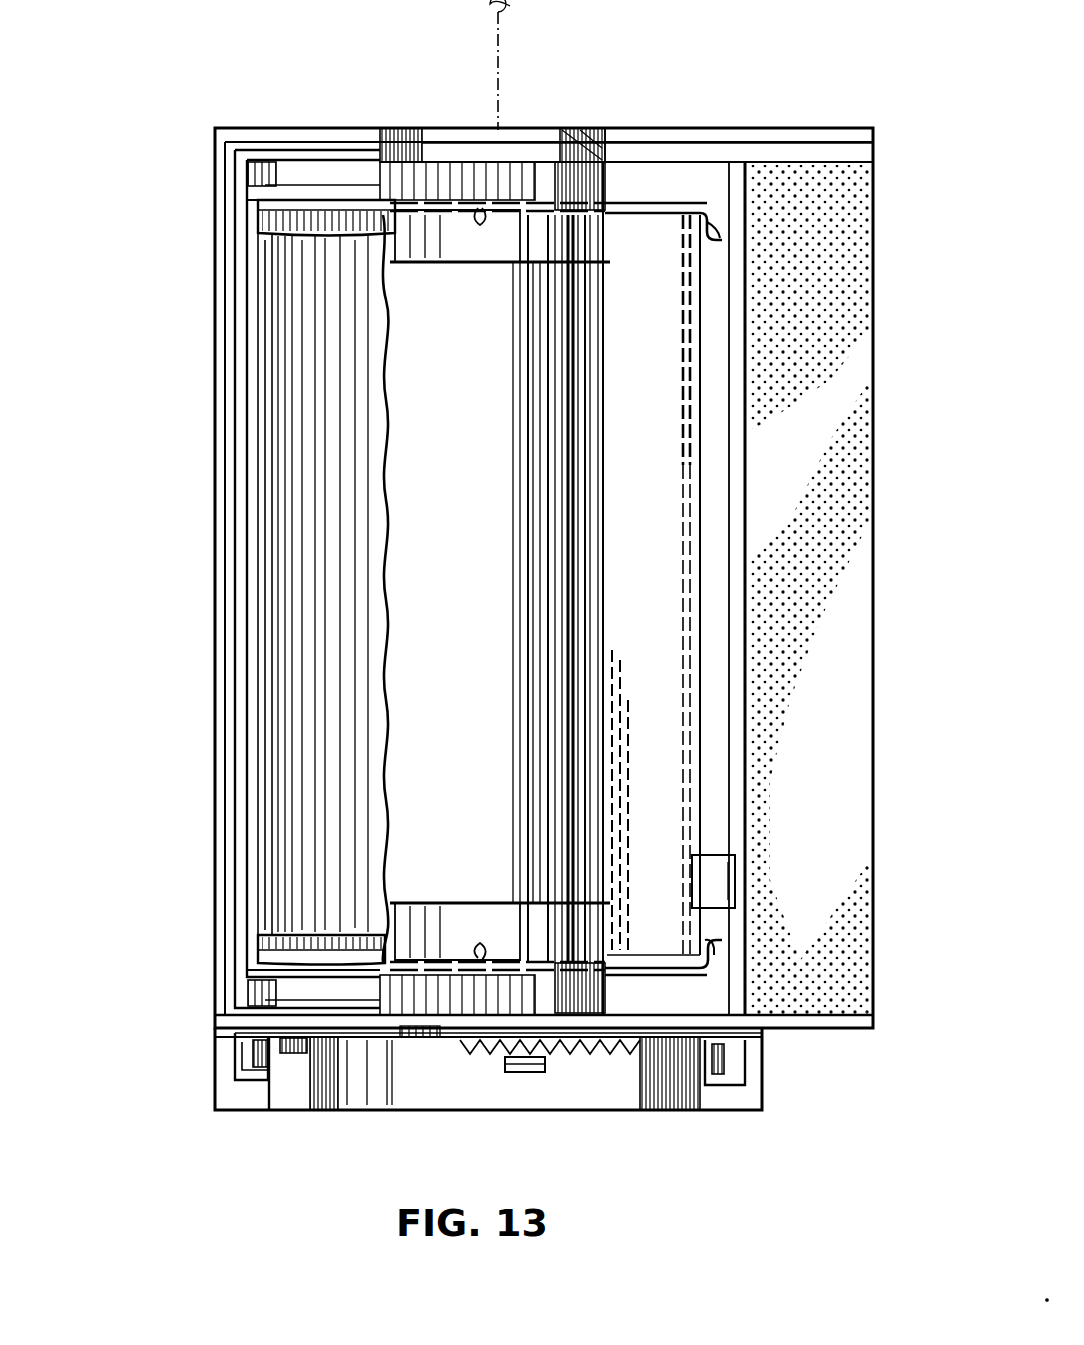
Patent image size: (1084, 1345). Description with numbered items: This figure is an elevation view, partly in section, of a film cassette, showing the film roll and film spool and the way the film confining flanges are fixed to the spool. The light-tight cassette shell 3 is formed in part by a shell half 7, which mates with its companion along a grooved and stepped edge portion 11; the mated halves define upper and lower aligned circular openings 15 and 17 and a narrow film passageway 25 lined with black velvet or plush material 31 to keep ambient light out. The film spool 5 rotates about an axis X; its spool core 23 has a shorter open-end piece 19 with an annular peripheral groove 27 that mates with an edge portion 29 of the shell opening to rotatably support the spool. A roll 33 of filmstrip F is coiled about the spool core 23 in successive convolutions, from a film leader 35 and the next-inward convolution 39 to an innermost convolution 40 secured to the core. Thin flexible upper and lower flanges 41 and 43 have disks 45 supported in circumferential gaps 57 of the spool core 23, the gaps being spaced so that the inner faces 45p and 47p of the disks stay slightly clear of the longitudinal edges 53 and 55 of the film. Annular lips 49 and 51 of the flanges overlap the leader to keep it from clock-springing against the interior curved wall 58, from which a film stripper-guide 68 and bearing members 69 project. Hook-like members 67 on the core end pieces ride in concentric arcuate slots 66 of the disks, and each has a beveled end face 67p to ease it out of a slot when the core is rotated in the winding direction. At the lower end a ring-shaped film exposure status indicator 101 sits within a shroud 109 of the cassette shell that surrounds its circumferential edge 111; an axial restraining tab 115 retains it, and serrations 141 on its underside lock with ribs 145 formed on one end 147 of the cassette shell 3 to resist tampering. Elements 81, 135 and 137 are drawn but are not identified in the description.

The axis X is at (520, 14).
The light-tight cassette shell 3 is at (323, 118).
The film spool 5 is at (268, 522).
The shell half 7 is at (256, 128).
The grooved and stepped edge portion 11 is at (235, 322).
The upper circular opening 15 is at (598, 158).
The lower circular opening 17 is at (590, 1050).
The shorter open-end piece 19 is at (412, 128).
The spool core 23 is at (604, 594).
The film passageway 25 is at (830, 340).
The annular peripheral groove 27 is at (475, 145).
The edge portion 29 is at (590, 157).
The black velvet or plush material 31 is at (843, 210).
The film roll 33 is at (268, 456).
The film leader 35 is at (713, 422).
The next-inward convolution 39 is at (700, 468).
The innermost convolution 40 is at (618, 690).
The upper film constraining flange 41 is at (268, 210).
The lower film constraining flange 43 is at (265, 952).
The disk 45 is at (652, 205).
The inner face of disk 45p is at (620, 205).
The inner face of disk 47p is at (668, 982).
The annular lip 49 is at (716, 225).
The annular lip 51 is at (712, 972).
The longitudinal edge 53 is at (664, 212).
The longitudinal edge 55 is at (645, 950).
The circumferential gap 57 is at (420, 252).
The interior curved wall 58 is at (258, 380).
The concentric arcuate slot 66 is at (522, 212).
The hook-like member 67 is at (506, 218).
The beveled end face 67p is at (486, 205).
The film stripper-guide 68 is at (695, 868).
The bearing member 69 is at (258, 172).
The partition 81 is at (740, 496).
The film exposure status indicator 101 is at (628, 1110).
The shroud 109 is at (762, 1082).
The circumferential edge 111 is at (355, 1112).
The axial restraining tab 115 is at (512, 1108).
The bracket 135 is at (238, 1070).
The base block 137 is at (730, 1112).
The serrations 141 is at (455, 1100).
The rib 145 is at (256, 1058).
The end of cassette shell 147 is at (298, 1040).
The filmstrip F is at (298, 574).